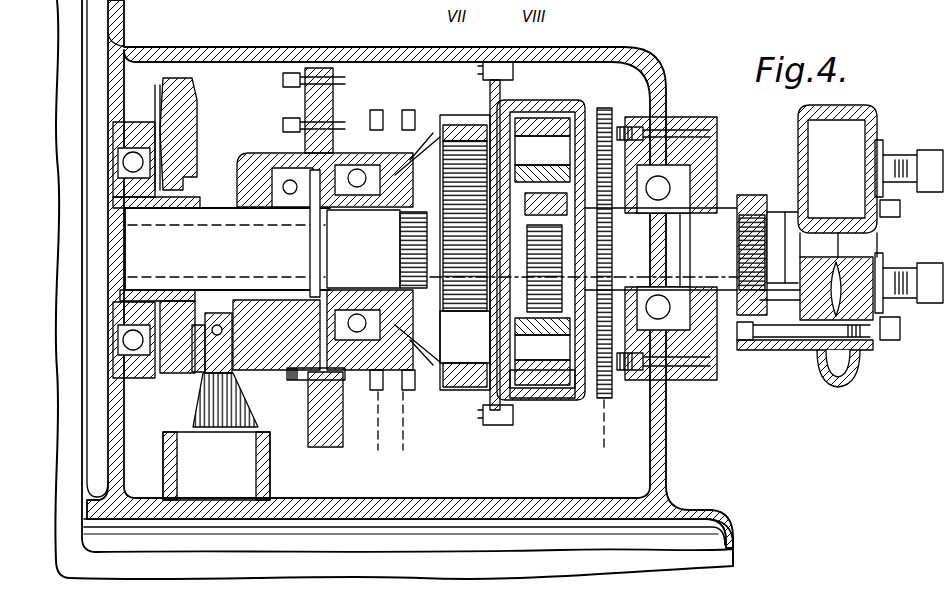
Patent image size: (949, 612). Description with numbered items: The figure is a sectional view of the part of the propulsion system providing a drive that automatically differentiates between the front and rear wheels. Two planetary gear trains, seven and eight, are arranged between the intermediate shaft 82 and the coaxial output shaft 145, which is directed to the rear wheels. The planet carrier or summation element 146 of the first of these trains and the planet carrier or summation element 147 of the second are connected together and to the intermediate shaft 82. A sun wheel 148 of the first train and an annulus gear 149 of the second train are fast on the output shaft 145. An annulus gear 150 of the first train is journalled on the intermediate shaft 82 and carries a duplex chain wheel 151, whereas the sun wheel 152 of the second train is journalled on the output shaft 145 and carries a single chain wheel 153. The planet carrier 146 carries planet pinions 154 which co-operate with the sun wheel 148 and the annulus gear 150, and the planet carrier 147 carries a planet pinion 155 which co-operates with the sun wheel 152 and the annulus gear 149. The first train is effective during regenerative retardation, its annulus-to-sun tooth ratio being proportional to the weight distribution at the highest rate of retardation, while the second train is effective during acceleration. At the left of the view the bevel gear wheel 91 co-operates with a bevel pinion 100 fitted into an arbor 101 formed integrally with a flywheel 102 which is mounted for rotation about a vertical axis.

The intermediate shaft 82 is at (227, 249).
The bevel gear wheel 91 is at (196, 106).
The bevel pinion 100 is at (252, 412).
The arbor 101 is at (216, 466).
The flywheel 102 is at (445, 530).
The output shaft 145 is at (745, 250).
The planet carrier of train VII 146 is at (440, 330).
The planet carrier of train VIII 147 is at (550, 405).
The sun wheel of train VII 148 is at (427, 247).
The annulus gear of train VIII 149 is at (557, 234).
The annulus gear of train VII 150 is at (483, 112).
The duplex chain wheel 151 is at (404, 108).
The sun wheel of train VIII 152 is at (540, 235).
The single chain wheel 153 is at (615, 118).
The planet pinions 154 is at (503, 120).
The planet pinion 155 is at (542, 150).